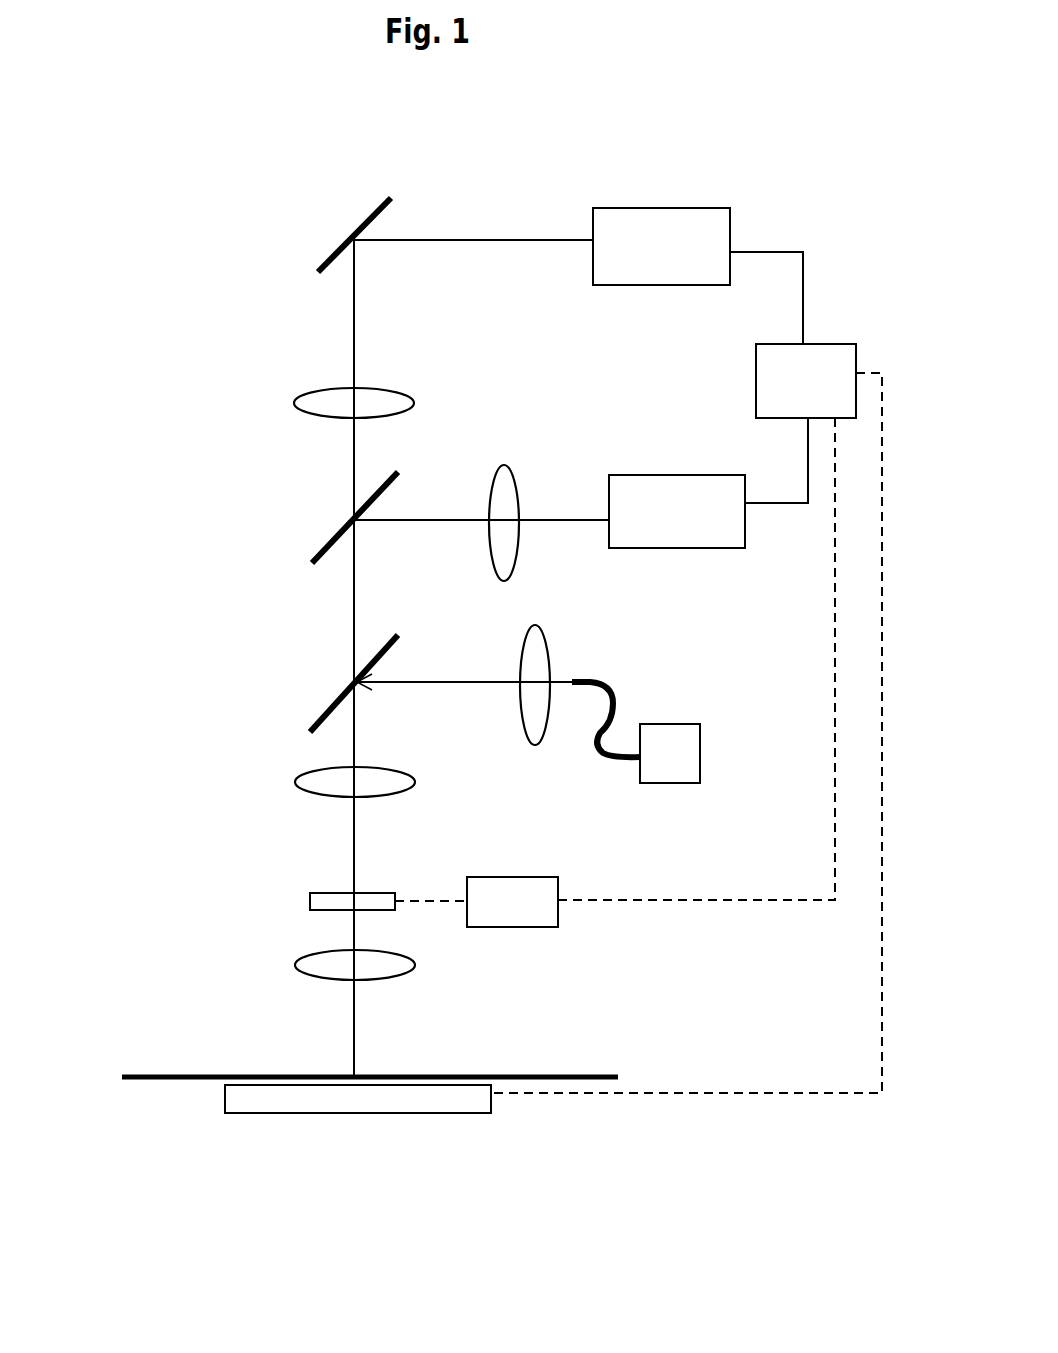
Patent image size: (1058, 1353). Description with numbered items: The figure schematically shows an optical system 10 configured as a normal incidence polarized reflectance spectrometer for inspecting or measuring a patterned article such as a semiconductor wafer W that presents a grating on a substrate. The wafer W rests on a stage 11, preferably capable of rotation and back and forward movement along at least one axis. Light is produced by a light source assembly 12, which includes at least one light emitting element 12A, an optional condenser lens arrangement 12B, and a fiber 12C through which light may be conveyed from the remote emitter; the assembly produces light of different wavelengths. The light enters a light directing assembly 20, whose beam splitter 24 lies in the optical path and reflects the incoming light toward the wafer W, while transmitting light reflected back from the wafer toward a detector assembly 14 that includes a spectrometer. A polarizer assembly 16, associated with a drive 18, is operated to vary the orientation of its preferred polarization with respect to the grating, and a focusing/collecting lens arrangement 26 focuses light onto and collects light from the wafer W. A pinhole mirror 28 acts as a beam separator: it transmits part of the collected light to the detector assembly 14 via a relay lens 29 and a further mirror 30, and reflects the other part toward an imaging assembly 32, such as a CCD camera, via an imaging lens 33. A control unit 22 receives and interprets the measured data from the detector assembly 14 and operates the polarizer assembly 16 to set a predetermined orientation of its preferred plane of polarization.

The optical system 10 is at (170, 137).
The stage 11 is at (492, 1102).
The light source assembly 12 is at (663, 720).
The light emitting element 12A is at (700, 760).
The condenser lens arrangement 12B is at (552, 668).
The fiber 12C is at (612, 757).
The detector assembly 14 is at (668, 208).
The polarizer assembly 16 is at (310, 904).
The drive 18 is at (510, 928).
The light directing assembly 20 is at (220, 793).
The control unit 22 is at (756, 387).
The beam splitter 24 is at (355, 682).
The focusing/collecting lens arrangement 26 is at (310, 978).
The pinhole mirror 28 is at (335, 532).
The relay lens 29 is at (323, 388).
The mirror 30 is at (318, 257).
The imaging assembly 32 is at (638, 475).
The imaging lens 33 is at (503, 465).
The semiconductor wafer W is at (263, 1077).